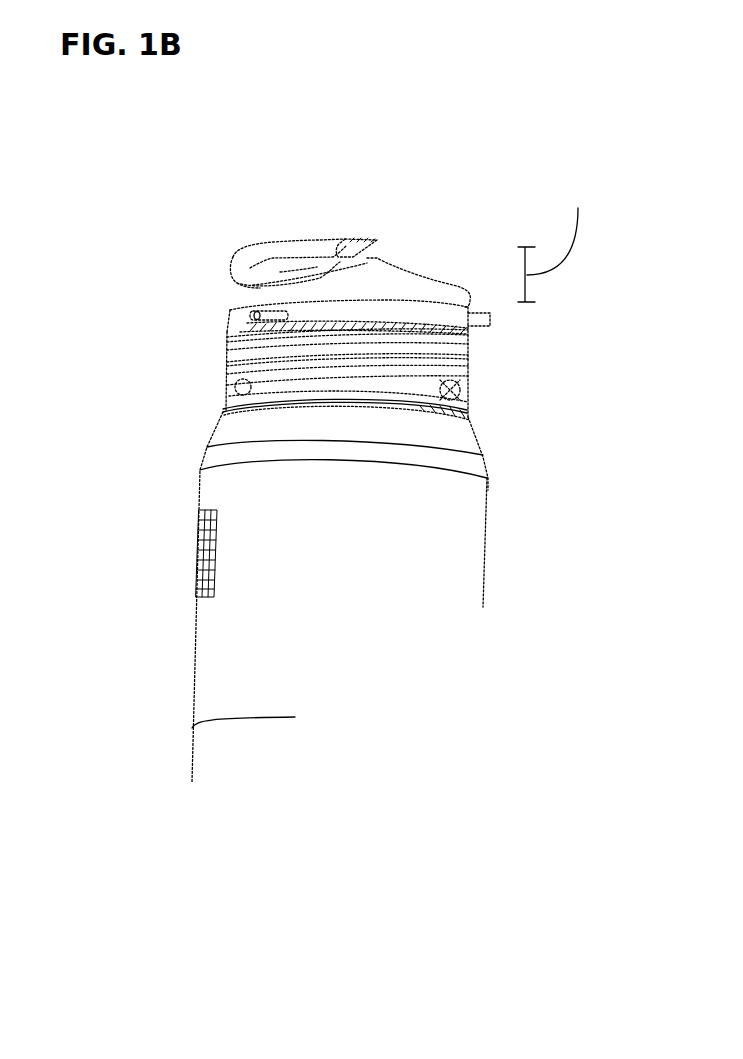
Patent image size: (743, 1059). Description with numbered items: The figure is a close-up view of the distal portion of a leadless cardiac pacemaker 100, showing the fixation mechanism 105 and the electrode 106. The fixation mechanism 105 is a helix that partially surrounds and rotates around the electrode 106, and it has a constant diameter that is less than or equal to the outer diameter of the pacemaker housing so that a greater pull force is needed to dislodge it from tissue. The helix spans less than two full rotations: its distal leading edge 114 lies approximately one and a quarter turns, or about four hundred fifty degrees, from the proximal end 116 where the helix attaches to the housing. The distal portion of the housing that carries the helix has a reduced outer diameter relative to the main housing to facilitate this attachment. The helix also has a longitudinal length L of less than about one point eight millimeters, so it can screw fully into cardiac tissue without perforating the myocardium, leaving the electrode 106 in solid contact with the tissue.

The leadless cardiac pacemaker 100 is at (543, 345).
The fixation mechanism 105 is at (235, 253).
The electrode 106 is at (371, 268).
The distal leading edge 114 is at (372, 238).
The proximal end 116 is at (233, 294).